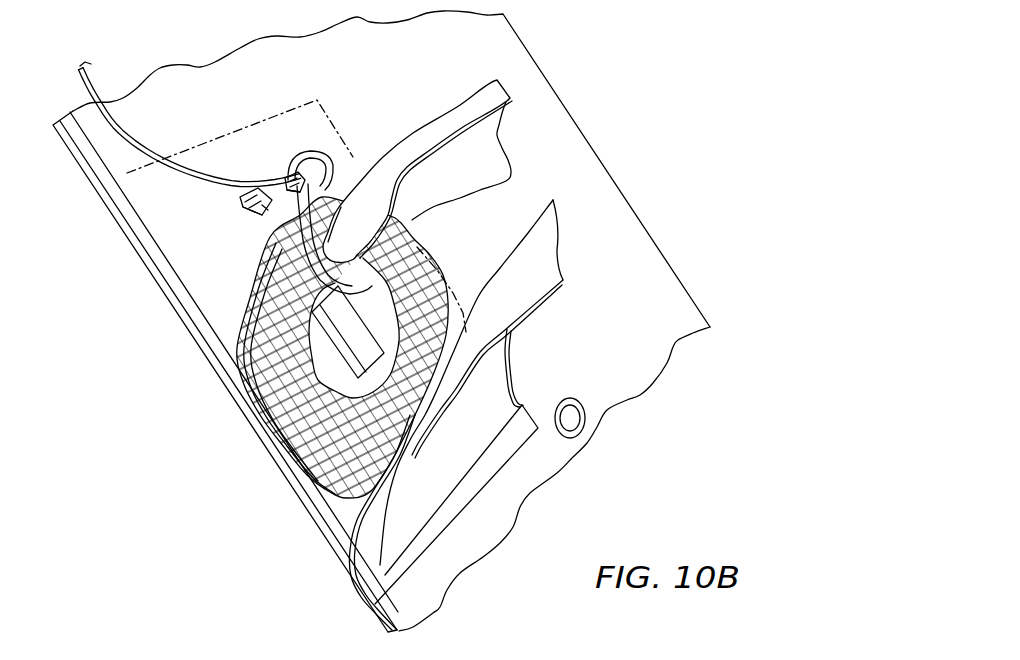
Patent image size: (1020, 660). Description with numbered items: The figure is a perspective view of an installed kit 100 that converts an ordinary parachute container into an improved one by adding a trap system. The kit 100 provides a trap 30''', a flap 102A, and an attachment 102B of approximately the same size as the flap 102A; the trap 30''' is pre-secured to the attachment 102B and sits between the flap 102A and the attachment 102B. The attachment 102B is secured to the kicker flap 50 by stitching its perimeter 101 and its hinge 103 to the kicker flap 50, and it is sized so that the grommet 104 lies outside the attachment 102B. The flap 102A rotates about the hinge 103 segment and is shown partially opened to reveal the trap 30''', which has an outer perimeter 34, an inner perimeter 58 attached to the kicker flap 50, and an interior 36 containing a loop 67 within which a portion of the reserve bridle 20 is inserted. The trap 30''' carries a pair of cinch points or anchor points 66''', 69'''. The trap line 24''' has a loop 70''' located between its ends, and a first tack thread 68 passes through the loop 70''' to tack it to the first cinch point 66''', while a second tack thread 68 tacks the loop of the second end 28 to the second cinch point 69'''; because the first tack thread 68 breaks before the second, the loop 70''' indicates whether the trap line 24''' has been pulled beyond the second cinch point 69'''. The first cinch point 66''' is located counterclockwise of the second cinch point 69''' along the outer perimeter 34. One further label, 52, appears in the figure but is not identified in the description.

The kit 100 is at (609, 89).
The kicker flap 50 is at (592, 330).
The reserve bridle 20 is at (484, 163).
The trap line 24''' is at (190, 124).
The second end of the trap line 28 is at (343, 172).
The trap 30''' is at (459, 274).
The outer perimeter 34 is at (343, 490).
The interior 36 is at (386, 405).
The section line 52 is at (130, 173).
The inner perimeter 58 is at (379, 375).
The first cinch point 66''' is at (232, 237).
The loop 67 is at (360, 323).
The tack thread 68 is at (293, 172).
The second cinch point 69''' is at (265, 162).
The loop of the trap line 70''' is at (215, 196).
The perimeter of the attachment 101 is at (200, 325).
The flap 102A is at (538, 265).
The attachment 102B is at (213, 295).
The hinge 103 is at (380, 578).
The grommet 104 is at (570, 433).